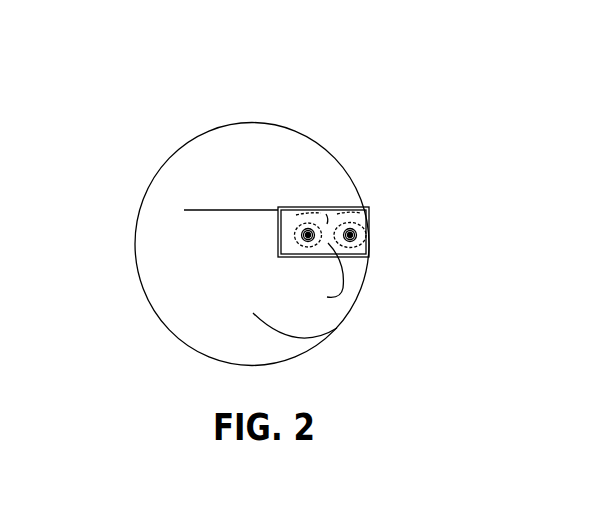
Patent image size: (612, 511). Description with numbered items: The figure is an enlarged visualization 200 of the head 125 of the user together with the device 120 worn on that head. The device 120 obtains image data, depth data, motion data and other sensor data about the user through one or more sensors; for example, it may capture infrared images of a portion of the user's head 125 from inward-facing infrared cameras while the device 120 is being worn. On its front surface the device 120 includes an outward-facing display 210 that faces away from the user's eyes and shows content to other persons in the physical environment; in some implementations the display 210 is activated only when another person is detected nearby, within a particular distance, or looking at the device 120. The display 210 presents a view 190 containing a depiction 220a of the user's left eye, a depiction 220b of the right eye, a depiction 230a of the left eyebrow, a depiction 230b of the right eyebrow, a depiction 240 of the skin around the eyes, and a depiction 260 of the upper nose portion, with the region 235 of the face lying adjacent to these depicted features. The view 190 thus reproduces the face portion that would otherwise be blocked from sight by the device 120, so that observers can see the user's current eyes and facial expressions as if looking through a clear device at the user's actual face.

The system environment 200 is at (96, 80).
The head of the user 125 is at (176, 152).
The device 120 is at (369, 258).
The view 190 is at (349, 212).
The outward-facing display 210 is at (370, 246).
The depiction of a left eye 220a is at (367, 233).
The depiction of a right eye 220b is at (294, 235).
The depiction of the left eyebrow 230a is at (369, 212).
The depiction of the right eyebrow 230b is at (307, 218).
The depiction of skin around the eyes 240 is at (328, 220).
The depiction of an upper nose portion 260 is at (332, 243).
The nose 235 is at (357, 278).